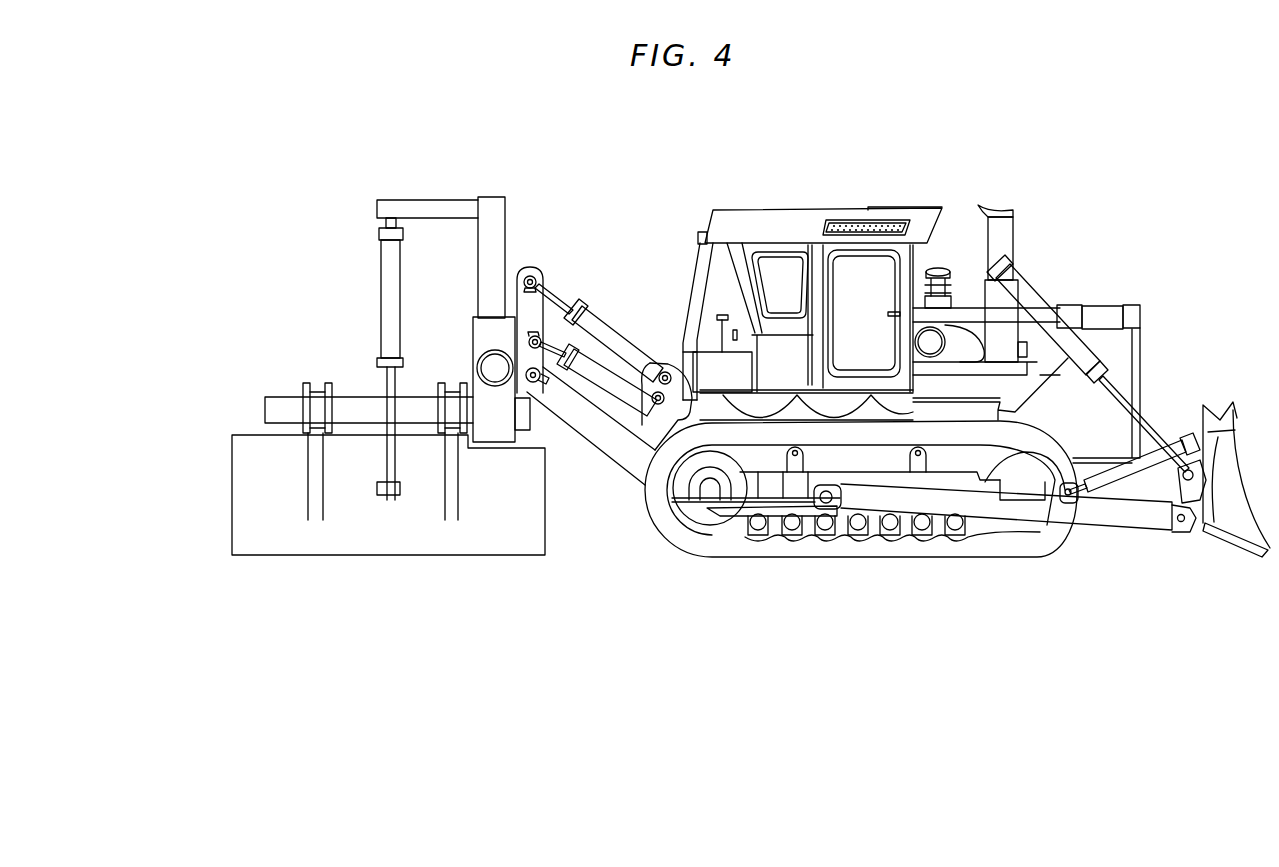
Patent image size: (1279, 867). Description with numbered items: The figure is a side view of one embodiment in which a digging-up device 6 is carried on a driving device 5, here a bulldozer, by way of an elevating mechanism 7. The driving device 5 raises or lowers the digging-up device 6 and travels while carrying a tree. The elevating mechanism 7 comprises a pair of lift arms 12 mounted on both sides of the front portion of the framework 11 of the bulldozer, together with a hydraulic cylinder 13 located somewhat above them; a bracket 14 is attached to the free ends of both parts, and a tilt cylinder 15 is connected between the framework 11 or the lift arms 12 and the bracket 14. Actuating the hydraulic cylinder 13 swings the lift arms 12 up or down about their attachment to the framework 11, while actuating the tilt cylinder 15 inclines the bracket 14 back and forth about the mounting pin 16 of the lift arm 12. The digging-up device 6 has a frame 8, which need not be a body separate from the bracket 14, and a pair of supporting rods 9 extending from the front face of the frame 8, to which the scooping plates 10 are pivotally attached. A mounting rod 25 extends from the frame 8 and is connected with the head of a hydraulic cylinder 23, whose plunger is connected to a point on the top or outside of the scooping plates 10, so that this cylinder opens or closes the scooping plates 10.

The driving device 5 is at (1017, 169).
The digging-up device 6 is at (217, 283).
The elevating mechanism 7 is at (617, 232).
The frame 8 is at (492, 200).
The supporting rods 9 is at (275, 402).
The scooping plates 10 is at (242, 503).
The framework 11 is at (782, 212).
The lift arms 12 is at (598, 432).
The hydraulic cylinder 13 is at (597, 367).
The bracket 14 is at (530, 267).
The tilt cylinder 15 is at (597, 327).
The mounting pin 16 is at (535, 388).
The hydraulic cylinder 23 is at (392, 285).
The mounting rod 25 is at (425, 200).